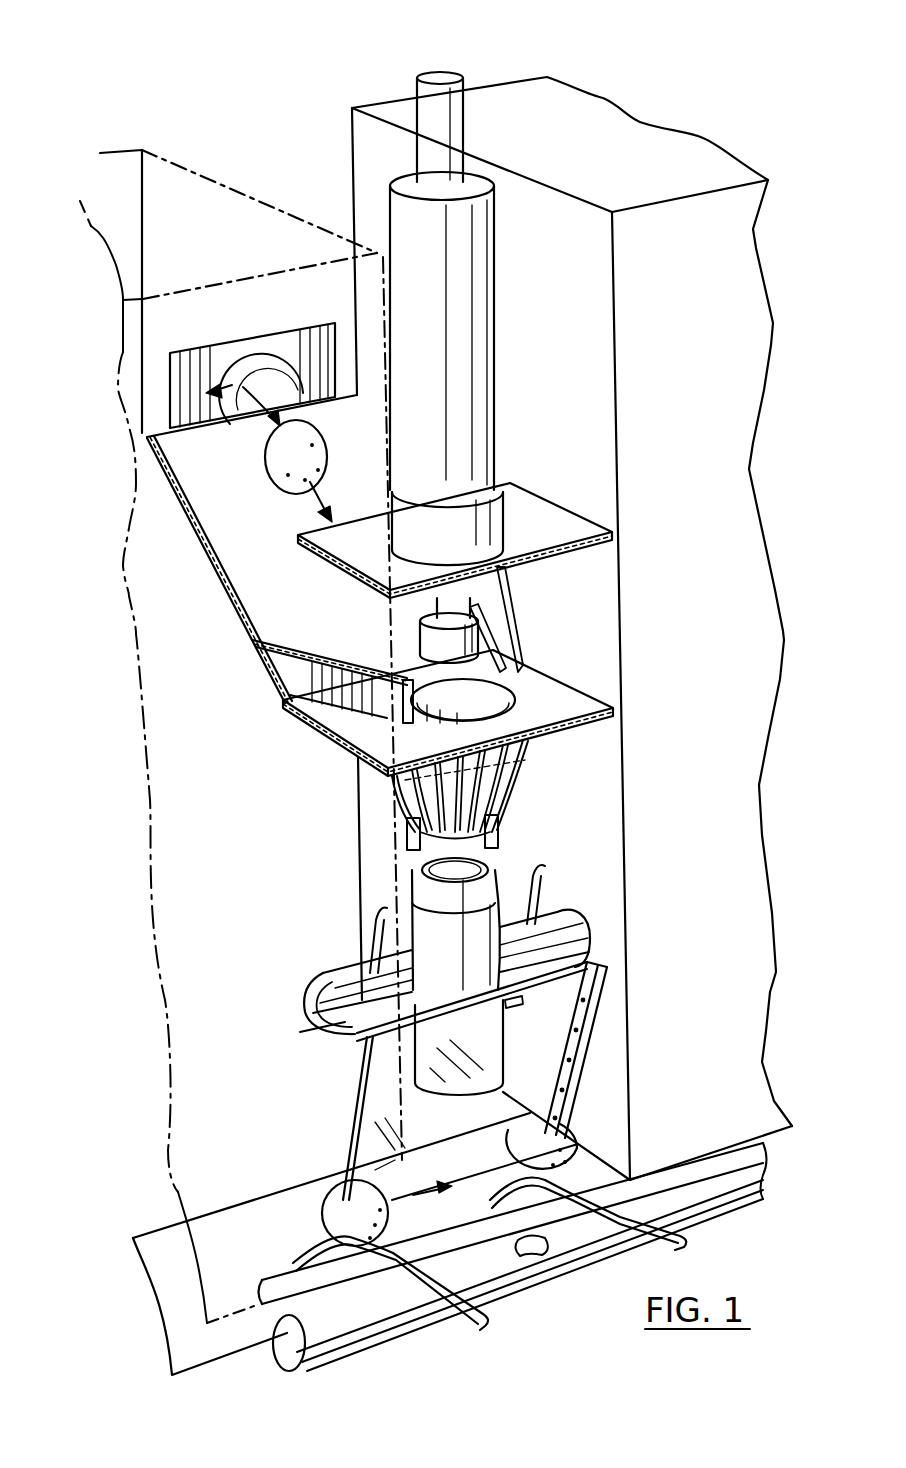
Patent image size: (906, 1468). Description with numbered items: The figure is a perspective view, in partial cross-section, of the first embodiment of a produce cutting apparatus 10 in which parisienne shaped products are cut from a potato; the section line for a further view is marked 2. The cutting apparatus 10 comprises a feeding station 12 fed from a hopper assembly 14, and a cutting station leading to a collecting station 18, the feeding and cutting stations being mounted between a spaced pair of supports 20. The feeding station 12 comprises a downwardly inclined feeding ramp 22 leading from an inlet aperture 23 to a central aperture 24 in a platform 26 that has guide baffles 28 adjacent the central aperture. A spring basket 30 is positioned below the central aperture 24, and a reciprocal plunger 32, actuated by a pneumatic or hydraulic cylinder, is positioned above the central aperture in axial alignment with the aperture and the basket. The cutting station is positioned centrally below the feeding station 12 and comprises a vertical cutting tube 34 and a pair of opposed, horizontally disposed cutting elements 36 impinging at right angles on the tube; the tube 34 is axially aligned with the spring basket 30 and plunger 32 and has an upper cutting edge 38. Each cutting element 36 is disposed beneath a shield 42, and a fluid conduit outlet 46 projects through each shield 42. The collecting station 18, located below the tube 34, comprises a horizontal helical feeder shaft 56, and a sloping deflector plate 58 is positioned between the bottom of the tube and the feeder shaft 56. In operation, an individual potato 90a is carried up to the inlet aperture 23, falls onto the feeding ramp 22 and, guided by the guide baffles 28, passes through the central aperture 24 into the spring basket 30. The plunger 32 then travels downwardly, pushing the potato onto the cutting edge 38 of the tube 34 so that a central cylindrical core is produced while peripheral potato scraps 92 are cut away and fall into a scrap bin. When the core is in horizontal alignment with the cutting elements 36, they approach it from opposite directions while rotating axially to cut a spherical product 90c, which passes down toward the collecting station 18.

The section line 2- 2 is at (440, 63).
The cutting apparatus 10 is at (658, 121).
The feeding station 12 is at (598, 632).
The hopper assembly 14 is at (214, 177).
The collecting station 18 is at (727, 1227).
The supports 20 is at (723, 483).
The feeding ramp 22 is at (228, 560).
The inlet aperture 23 is at (146, 410).
The central aperture 24 is at (527, 701).
The platform 26 is at (613, 718).
The guide baffles 28 is at (508, 626).
The spring basket 30 is at (518, 780).
The reciprocal plunger 32 is at (478, 416).
The vertical cutting tube 34 is at (492, 856).
The cutting elements 36 is at (517, 1006).
The upper cutting edge 38 is at (378, 860).
The shield 42 is at (572, 941).
The fluid conduit outlet 46 is at (370, 917).
The horizontal helical feeder shaft 56 is at (746, 1176).
The sloping deflector plate 58 is at (370, 1071).
The potato 90a is at (275, 463).
The spherical product 90c is at (333, 1200).
The peripheral potato scraps 92 is at (516, 1245).